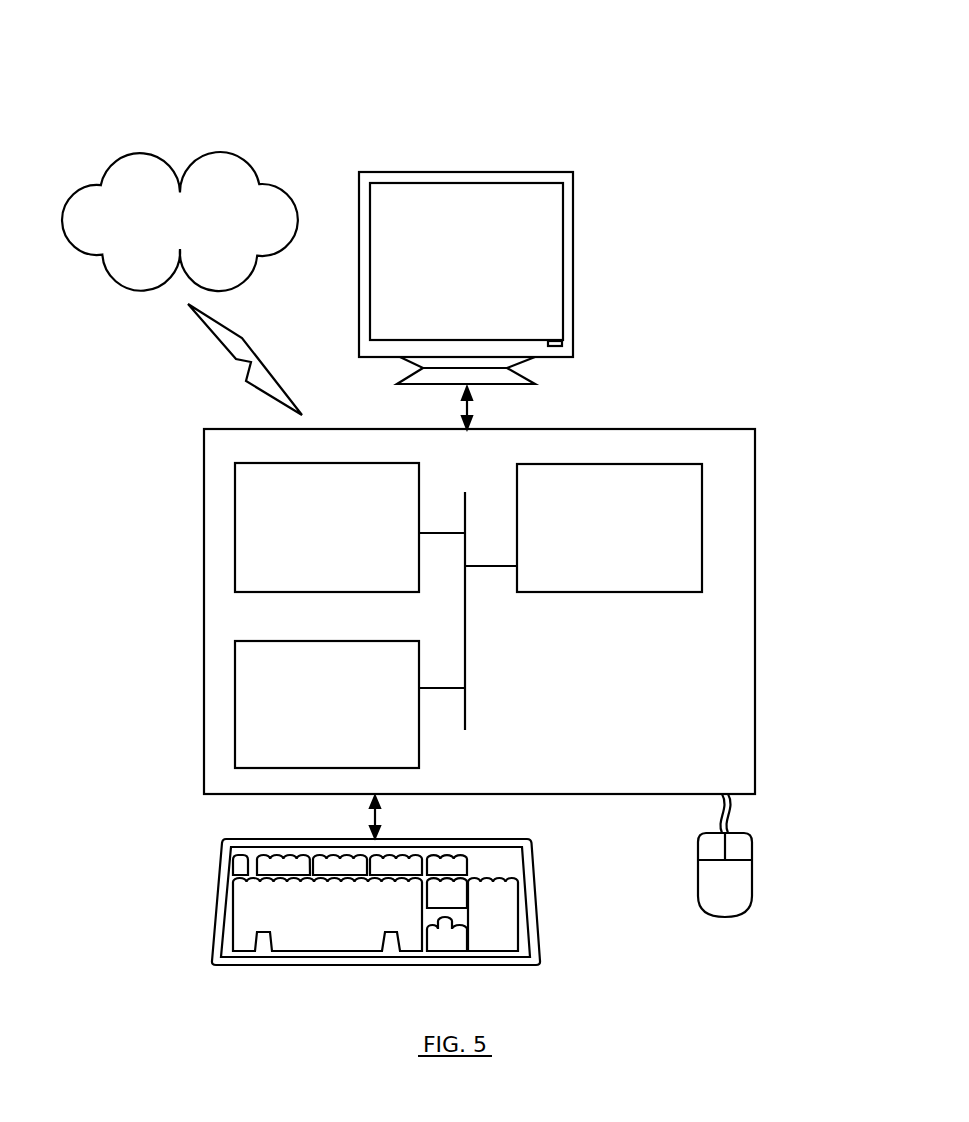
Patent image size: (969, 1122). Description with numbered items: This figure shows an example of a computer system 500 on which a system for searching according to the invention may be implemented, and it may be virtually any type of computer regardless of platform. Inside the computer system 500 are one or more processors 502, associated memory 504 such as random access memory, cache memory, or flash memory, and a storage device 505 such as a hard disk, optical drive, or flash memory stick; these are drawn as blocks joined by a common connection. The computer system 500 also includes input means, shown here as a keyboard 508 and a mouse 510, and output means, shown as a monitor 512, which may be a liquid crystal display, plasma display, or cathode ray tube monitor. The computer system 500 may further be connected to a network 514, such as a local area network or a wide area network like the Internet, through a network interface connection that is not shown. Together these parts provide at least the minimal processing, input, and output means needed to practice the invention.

The computer system 500 is at (391, 110).
The processor 502 is at (591, 549).
The memory 504 is at (309, 555).
The storage device 505 is at (308, 741).
The keyboard 508 is at (223, 839).
The mouse 510 is at (752, 858).
The monitor 512 is at (574, 298).
The network 514 is at (162, 240).